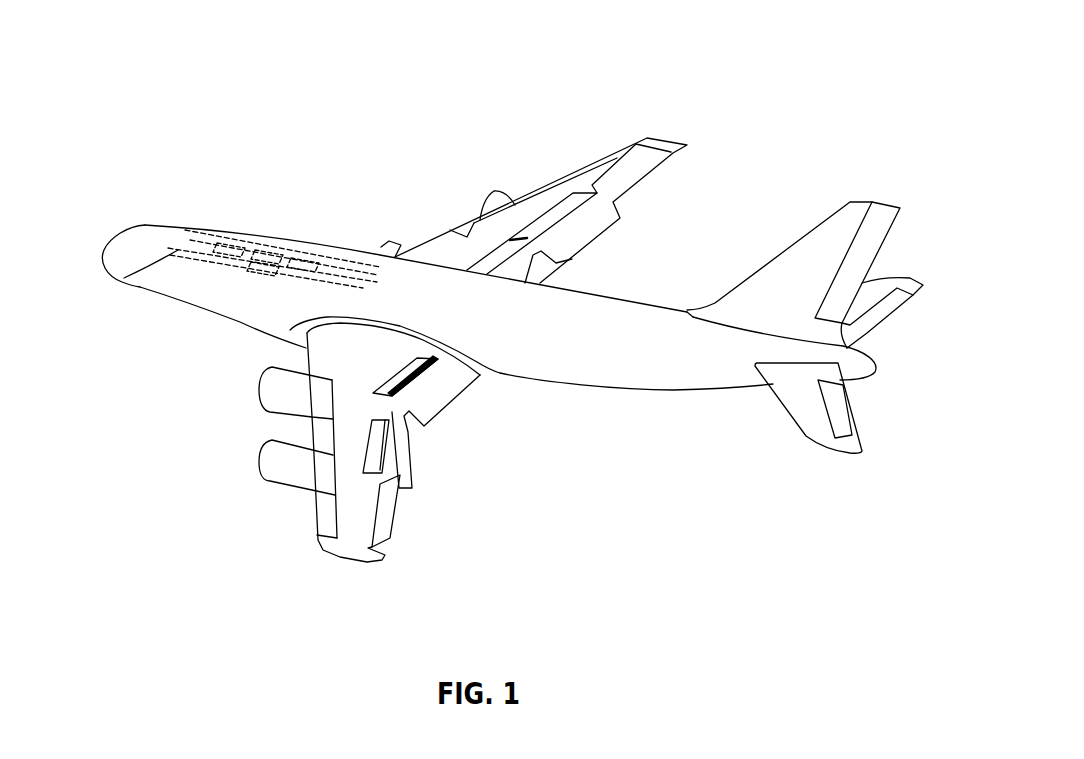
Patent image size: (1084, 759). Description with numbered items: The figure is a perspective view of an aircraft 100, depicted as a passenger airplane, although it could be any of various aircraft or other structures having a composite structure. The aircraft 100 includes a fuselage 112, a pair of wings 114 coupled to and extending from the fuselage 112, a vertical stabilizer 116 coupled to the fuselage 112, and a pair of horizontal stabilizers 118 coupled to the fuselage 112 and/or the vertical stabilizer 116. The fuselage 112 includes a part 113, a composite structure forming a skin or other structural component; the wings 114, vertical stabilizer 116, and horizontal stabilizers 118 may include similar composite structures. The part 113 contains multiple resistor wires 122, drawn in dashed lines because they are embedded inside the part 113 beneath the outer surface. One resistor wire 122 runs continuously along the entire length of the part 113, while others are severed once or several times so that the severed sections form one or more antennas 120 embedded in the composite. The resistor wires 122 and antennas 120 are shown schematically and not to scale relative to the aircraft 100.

The aircraft 100 is at (502, 321).
The fuselage 112 is at (188, 276).
The part 113 is at (229, 232).
The wings 114 is at (608, 172).
The vertical stabilizer 116 is at (840, 228).
The horizontal stabilizers 118 is at (903, 279).
The antenna 120 is at (240, 241).
The resistor wires 122 is at (184, 236).